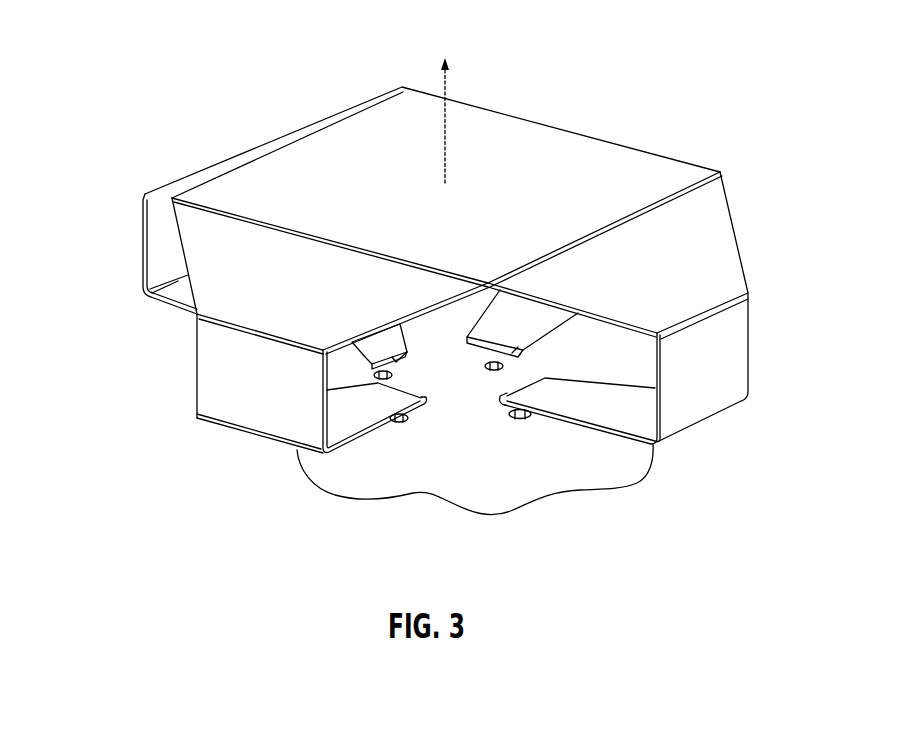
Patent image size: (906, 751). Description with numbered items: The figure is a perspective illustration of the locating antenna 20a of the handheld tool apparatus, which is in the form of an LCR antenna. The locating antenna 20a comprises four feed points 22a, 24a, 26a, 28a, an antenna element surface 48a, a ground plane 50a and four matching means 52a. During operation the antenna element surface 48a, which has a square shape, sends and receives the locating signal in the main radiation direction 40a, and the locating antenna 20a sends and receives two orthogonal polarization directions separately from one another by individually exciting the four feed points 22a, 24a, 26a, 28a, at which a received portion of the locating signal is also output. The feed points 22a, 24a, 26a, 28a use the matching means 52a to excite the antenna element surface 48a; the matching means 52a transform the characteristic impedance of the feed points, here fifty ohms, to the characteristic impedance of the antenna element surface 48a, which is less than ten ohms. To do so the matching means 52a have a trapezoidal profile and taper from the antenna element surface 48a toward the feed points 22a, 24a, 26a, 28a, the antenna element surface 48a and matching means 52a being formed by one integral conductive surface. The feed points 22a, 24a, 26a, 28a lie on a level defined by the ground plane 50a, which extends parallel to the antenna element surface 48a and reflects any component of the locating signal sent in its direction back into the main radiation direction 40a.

The locating antenna 20a is at (412, 256).
The feed point 22a is at (401, 375).
The feed point 24a is at (493, 373).
The feed point 26a is at (522, 421).
The feed point 28a is at (402, 421).
The main radiation direction 40a is at (448, 87).
The antenna element surface 48a is at (584, 170).
The ground plane 50a is at (508, 490).
The matching means 52a is at (134, 240).